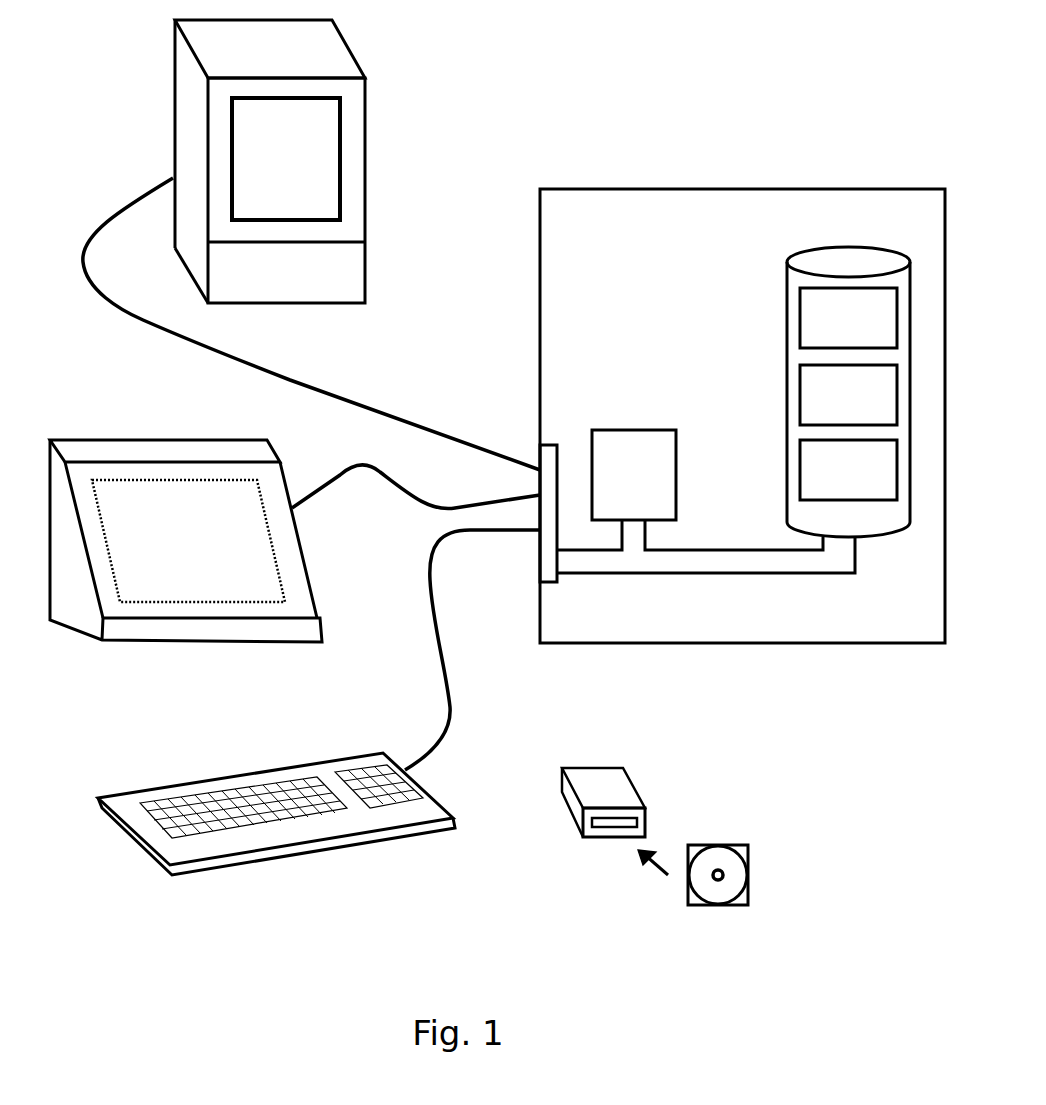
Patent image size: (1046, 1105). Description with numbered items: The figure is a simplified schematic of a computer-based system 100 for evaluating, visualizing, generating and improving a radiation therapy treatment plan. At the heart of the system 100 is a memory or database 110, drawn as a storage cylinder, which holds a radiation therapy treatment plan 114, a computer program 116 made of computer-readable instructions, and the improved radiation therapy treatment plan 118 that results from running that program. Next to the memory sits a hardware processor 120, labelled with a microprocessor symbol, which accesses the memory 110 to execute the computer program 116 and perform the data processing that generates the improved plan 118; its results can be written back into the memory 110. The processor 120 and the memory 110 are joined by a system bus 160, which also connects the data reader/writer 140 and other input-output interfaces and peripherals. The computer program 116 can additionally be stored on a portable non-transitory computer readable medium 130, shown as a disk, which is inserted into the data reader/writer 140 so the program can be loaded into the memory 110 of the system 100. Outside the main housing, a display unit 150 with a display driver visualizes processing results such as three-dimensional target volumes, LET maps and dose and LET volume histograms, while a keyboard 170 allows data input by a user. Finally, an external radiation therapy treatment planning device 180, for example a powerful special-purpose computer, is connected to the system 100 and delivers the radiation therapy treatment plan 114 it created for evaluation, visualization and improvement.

The computer-based system 100 is at (558, 102).
The memory or database 110 is at (848, 334).
The radiation therapy treatment plan 114 is at (848, 470).
The computer program 116 is at (848, 318).
The improved radiation therapy treatment plan 118 is at (848, 395).
The hardware processor 120 is at (627, 442).
The non-transitory computer readable medium 130 is at (735, 862).
The data reader/writer 140 is at (572, 803).
The display unit 150 is at (178, 449).
The system bus 160 is at (765, 562).
The keyboard 170 is at (287, 833).
The external radiation therapy treatment planning device 180 is at (353, 110).